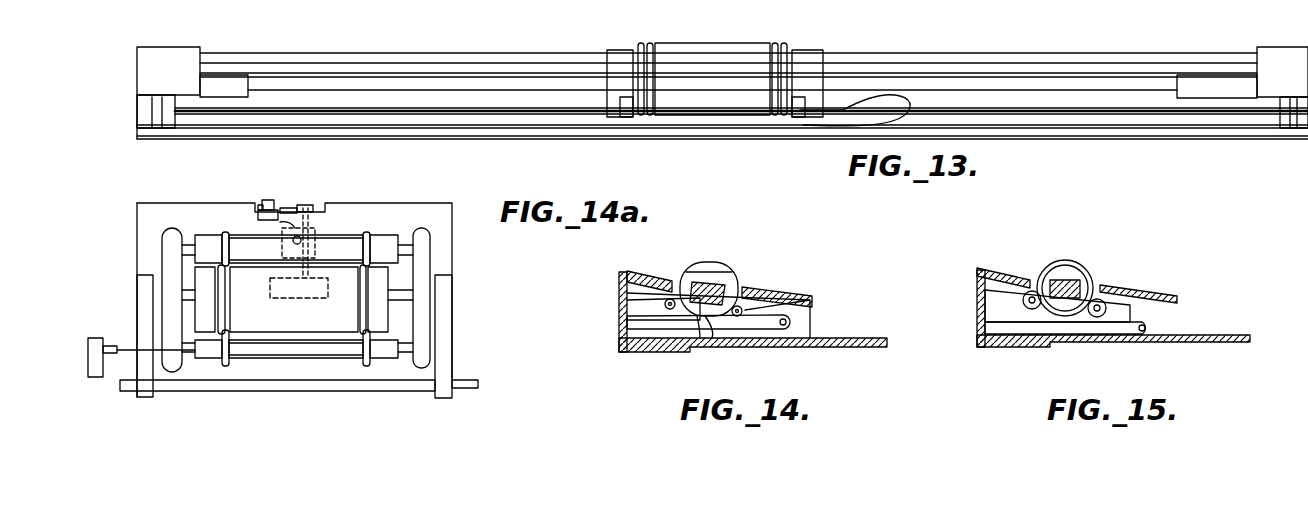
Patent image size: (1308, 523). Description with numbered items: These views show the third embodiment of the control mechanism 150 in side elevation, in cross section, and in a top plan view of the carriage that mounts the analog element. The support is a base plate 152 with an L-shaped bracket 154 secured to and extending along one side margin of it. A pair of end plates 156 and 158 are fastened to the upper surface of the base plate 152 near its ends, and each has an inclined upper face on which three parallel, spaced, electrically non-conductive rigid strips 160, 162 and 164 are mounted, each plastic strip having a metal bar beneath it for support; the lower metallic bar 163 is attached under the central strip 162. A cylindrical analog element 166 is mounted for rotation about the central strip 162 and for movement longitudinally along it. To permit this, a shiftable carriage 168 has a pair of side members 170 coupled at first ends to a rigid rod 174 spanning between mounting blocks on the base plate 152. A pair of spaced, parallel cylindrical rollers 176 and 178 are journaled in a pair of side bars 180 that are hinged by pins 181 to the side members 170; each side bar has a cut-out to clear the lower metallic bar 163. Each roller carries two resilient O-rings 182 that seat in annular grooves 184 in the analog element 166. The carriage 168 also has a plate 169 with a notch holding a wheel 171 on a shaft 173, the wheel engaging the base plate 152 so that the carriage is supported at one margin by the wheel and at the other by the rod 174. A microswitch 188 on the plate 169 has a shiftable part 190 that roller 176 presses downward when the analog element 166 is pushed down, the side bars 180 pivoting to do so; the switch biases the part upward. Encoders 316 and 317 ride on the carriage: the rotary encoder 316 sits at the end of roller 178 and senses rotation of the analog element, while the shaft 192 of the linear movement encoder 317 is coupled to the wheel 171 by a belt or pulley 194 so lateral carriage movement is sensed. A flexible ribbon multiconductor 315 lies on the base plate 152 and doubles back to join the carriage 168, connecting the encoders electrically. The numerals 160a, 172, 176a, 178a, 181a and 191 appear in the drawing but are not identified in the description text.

In FIG. 13, the control mechanism 150 is at (1122, 36).
In FIG. 14, the base plate 152 is at (808, 345).
In FIG. 15, the base plate 152 is at (1122, 343).
In FIG. 14, the L-shaped bracket 154 is at (619, 333).
In FIG. 15, the L-shaped bracket 154 is at (975, 333).
In FIG. 13, the end plate 156 is at (148, 118).
In FIG. 13, the end plate 158 is at (1278, 60).
In FIG. 13, the strip 160 is at (485, 58).
In FIG. 14, the strip 160 is at (645, 272).
In FIG. 15, the strip 160 is at (1003, 268).
In FIG. 13, the rail end support 160a is at (157, 100).
In FIG. 13, the central strip 162 is at (230, 82).
In FIG. 14, the central strip 162 is at (722, 283).
In FIG. 14, the lower metallic bar 163 is at (712, 338).
In FIG. 15, the lower metallic bar 163 is at (1082, 289).
In FIG. 13, the strip 164 is at (573, 118).
In FIG. 14, the strip 164 is at (790, 290).
In FIG. 15, the strip 164 is at (1170, 288).
In FIG. 13, the cylindrical analog element 166 is at (716, 45).
In FIG. 14A, the cylindrical analog element 166 is at (390, 310).
In FIG. 14, the cylindrical analog element 166 is at (716, 256).
In FIG. 15, the cylindrical analog element 166 is at (1094, 262).
In FIG. 13, the shiftable carriage 168 is at (805, 32).
In FIG. 14A, the shiftable carriage 168 is at (435, 215).
In FIG. 14A, the plate 169 is at (428, 210).
In FIG. 14A, the side member 170 is at (140, 282).
In FIG. 14A, the wheel 171 is at (305, 204).
In FIG. 14A, the end plate 172 is at (148, 396).
In FIG. 14A, the shaft 173 is at (313, 207).
In FIG. 13, the rigid rod 174 is at (370, 110).
In FIG. 14A, the rigid rod 174 is at (350, 380).
In FIG. 14A, the cylindrical roller 176 is at (385, 240).
In FIG. 14A, the lower roller 176a is at (158, 385).
In FIG. 14A, the cylindrical roller 178 is at (355, 392).
In FIG. 14A, the bottom plate tab 178a is at (458, 380).
In FIG. 14A, the side bar 180 is at (165, 263).
In FIG. 14, the side bar 180 is at (650, 312).
In FIG. 15, the side bar 180 is at (1065, 312).
In FIG. 14A, the pin 181 is at (160, 360).
In FIG. 14, the pivot arm 181a is at (700, 338).
In FIG. 14A, the O-ring 182 is at (225, 235).
In FIG. 14A, the annular groove 184 is at (222, 307).
In FIG. 14A, the microswitch 188 is at (316, 230).
In FIG. 14A, the shiftable part 190 is at (280, 224).
In FIG. 14A, the limit switch 191 is at (108, 340).
In FIG. 14A, the shaft 192 is at (268, 200).
In FIG. 14A, the belt or pulley 194 is at (305, 204).
In FIG. 13, the flexible ribbon multiconductor 315 is at (910, 100).
In FIG. 14A, the flexible ribbon multiconductor 315 is at (292, 299).
In FIG. 14A, the rotary encoder 316 is at (95, 377).
In FIG. 14A, the linear movement encoder 317 is at (260, 206).